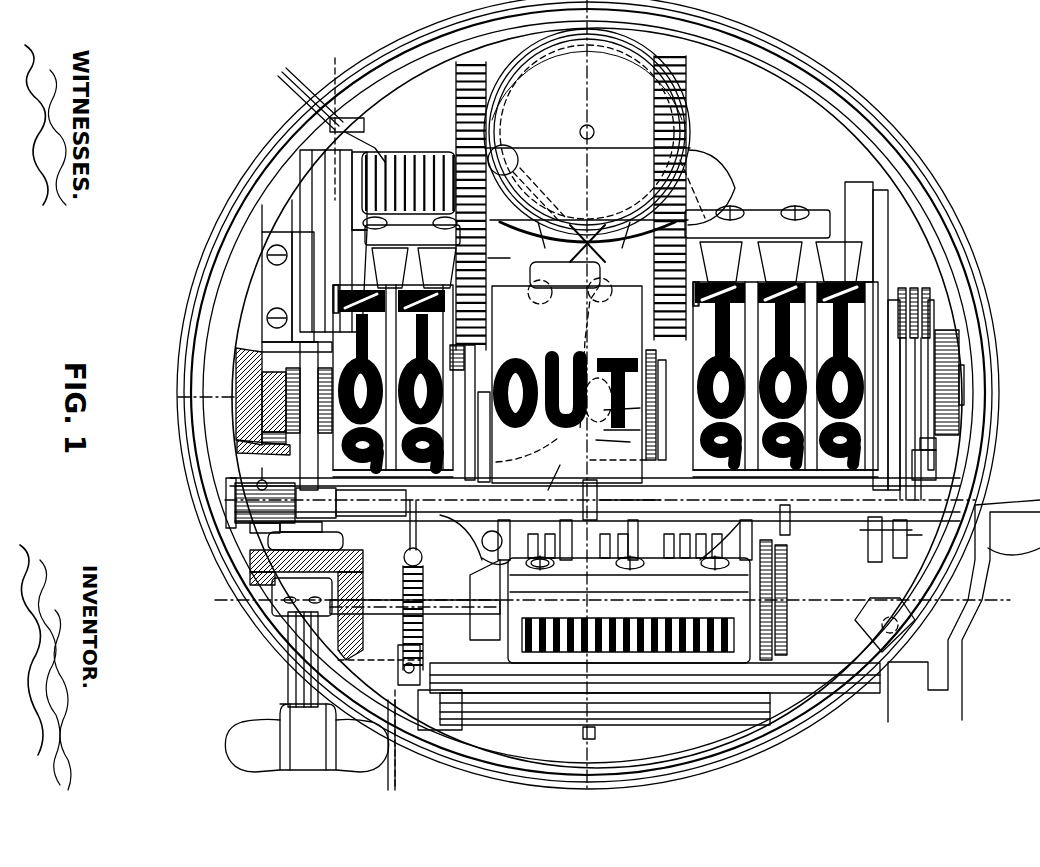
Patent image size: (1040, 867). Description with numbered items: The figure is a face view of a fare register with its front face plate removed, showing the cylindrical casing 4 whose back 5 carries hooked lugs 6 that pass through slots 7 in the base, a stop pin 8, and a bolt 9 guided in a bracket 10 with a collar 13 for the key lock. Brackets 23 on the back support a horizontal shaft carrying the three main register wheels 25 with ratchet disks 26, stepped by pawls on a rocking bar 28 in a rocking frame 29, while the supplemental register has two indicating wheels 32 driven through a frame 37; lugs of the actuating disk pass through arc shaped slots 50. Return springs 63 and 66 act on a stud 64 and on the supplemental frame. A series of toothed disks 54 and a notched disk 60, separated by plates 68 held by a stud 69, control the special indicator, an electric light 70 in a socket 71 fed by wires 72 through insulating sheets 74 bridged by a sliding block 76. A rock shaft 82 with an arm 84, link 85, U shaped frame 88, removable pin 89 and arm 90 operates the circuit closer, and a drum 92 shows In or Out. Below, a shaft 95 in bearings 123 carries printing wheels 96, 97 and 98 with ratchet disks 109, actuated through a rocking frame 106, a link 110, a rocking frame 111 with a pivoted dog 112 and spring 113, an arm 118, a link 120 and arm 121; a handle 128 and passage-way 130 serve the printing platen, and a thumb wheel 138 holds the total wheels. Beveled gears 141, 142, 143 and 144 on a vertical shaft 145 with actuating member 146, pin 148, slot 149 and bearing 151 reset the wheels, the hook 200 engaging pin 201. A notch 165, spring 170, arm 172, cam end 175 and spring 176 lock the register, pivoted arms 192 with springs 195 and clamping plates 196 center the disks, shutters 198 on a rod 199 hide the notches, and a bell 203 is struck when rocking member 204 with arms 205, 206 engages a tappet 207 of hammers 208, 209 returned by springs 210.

The casing 4 is at (577, 395).
The back 5 is at (366, 54).
The hooked lugs 6 is at (198, 394).
The slots 7 is at (219, 620).
The pin 8 is at (486, 275).
The bolt 9 is at (882, 627).
The guide bracket 10 is at (881, 620).
The collar 13 is at (948, 238).
The brackets 23 is at (936, 460).
The main register wheels 25 is at (772, 290).
The ratchet disks 26 is at (466, 348).
The rocking bar 28 is at (260, 511).
The rocking frame 29 is at (998, 424).
The indicating wheels 32 is at (415, 285).
The frame 37 is at (322, 330).
The arc shaped slots 50 is at (590, 535).
The disks 54 is at (935, 295).
The disk 60 is at (900, 288).
The spring 63 is at (688, 92).
The stud 64 is at (639, 405).
The spring 66 is at (460, 102).
The plates 68 is at (940, 338).
The stud 69 is at (935, 308).
The electric light 70 is at (587, 135).
The socket 71 is at (405, 150).
The wires 72 is at (315, 95).
The insulating sheets 74 is at (312, 178).
The sliding block 76 is at (316, 345).
The rock shaft 82 is at (226, 500).
The arm 84 is at (919, 537).
The link 85 is at (871, 372).
The U shaped frame 88 is at (600, 499).
The removable pin 89 is at (253, 475).
The arm 90 is at (416, 530).
The drum 92 is at (567, 384).
The shaft 95 is at (445, 600).
The printing wheels 96 is at (740, 543).
The printing wheels 97 is at (631, 535).
The printing wheels 98 is at (514, 536).
The rocking frame 106 is at (480, 628).
The ratchet disk 109 is at (650, 625).
The link 110 is at (665, 490).
The rocking frame 111 is at (632, 404).
The pivoted dog 112 is at (613, 442).
The spring 113 is at (632, 430).
The arm 118 is at (502, 556).
The link 120 is at (594, 500).
The arm 121 is at (567, 468).
The bearings 123 is at (787, 578).
The handle 128 is at (990, 560).
The passage-way 130 is at (655, 669).
The thumb wheel 138 is at (772, 562).
The beveled gear 141 is at (236, 372).
The beveled gear 142 is at (324, 605).
The beveled gear 143 is at (237, 462).
The beveled gear 144 is at (252, 535).
The vertical shaft 145 is at (288, 682).
The actuating member 146 is at (305, 760).
The pin 148 is at (230, 522).
The slot 149 is at (343, 540).
The bearing 151 is at (262, 438).
The notch 165 is at (398, 690).
The spring 170 is at (423, 565).
The arm 172 is at (595, 733).
The cam shaped end 175 is at (409, 745).
The spring 176 is at (440, 710).
The pivoted arm 192 is at (775, 272).
The springs 195 is at (569, 567).
The clamping plates 196 is at (748, 536).
The shutters 198 is at (400, 352).
The rod 199 is at (686, 532).
The hook 200 is at (338, 640).
The pin 201 is at (379, 647).
The bell 203 is at (587, 85).
The rocking member 204 is at (625, 338).
The arm 205 is at (526, 449).
The arm 206 is at (619, 458).
The tappet 207 is at (560, 300).
The hammer 208 is at (725, 150).
The hammer 209 is at (522, 133).
The springs 210 is at (591, 242).